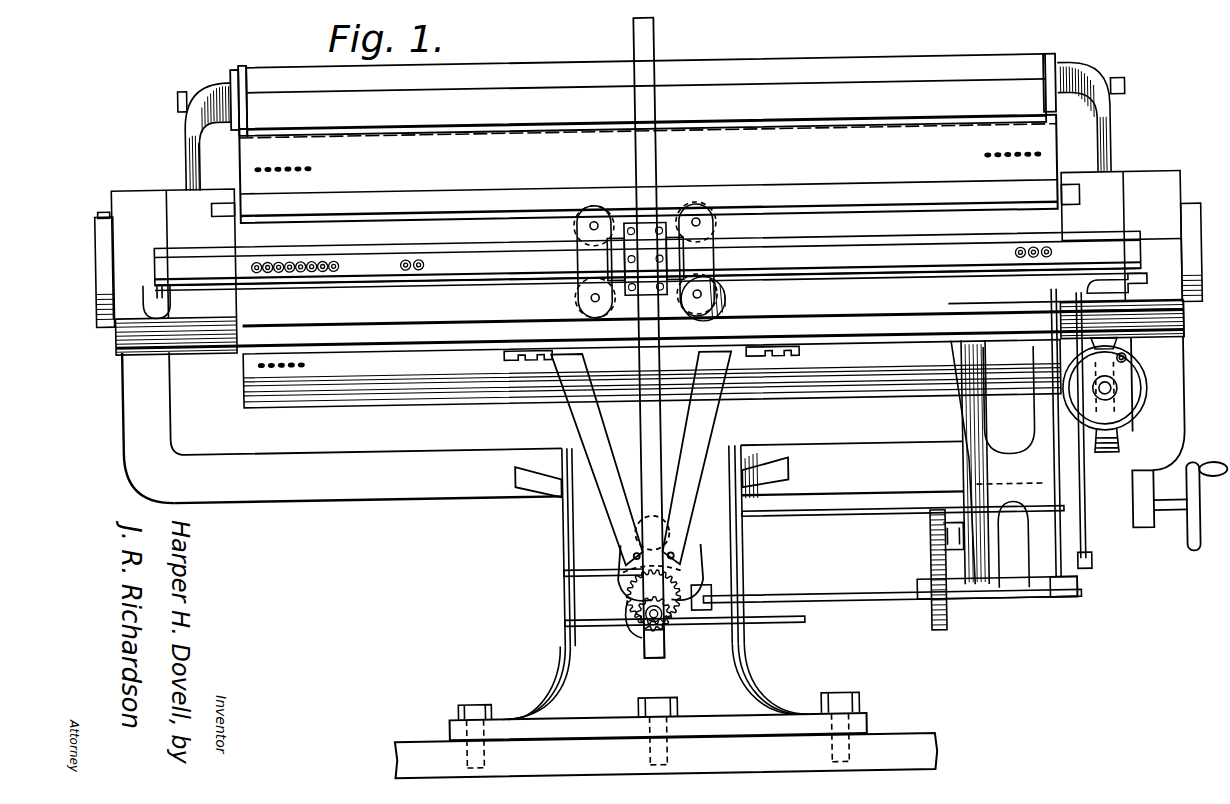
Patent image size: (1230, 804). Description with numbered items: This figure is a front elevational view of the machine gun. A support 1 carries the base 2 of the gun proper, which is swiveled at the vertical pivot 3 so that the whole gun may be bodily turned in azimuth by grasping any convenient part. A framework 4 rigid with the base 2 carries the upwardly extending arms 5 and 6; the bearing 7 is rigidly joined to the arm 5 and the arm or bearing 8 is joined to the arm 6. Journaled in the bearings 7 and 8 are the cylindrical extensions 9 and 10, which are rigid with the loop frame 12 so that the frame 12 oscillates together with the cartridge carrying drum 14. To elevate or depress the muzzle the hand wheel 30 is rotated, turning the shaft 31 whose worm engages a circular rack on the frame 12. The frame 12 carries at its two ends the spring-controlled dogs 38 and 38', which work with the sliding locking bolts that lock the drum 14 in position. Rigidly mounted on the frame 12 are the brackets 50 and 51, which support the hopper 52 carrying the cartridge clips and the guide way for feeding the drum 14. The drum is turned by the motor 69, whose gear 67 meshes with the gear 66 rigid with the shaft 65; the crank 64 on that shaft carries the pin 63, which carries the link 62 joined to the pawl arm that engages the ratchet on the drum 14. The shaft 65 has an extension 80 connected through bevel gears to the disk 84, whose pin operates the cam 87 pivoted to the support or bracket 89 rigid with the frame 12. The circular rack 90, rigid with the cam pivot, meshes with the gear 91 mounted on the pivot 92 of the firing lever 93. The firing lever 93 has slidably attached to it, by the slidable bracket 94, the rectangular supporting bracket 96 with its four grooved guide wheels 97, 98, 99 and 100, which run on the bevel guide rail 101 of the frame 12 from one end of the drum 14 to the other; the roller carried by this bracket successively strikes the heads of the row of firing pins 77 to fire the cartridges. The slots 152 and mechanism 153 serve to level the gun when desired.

The support 1 is at (560, 668).
The base 2 is at (575, 548).
The swivel pivot 3 is at (598, 575).
The framework 4 is at (440, 498).
The arm 5 is at (158, 411).
The arm 6 is at (1170, 378).
The bearing 7 is at (140, 195).
The arm or bearing 8 is at (1138, 186).
The cylindrical extension 9 is at (97, 303).
The cylindrical extension 10 is at (1178, 219).
The frame 12 is at (893, 328).
The cartridge carrying drum 14 is at (790, 130).
The hand wheel 30 is at (1134, 403).
The shaft 31 is at (1100, 393).
The dog 38 is at (176, 301).
The dog 38' is at (1117, 268).
The bracket 50 is at (1108, 124).
The bracket 51 is at (200, 136).
The hopper 52 is at (915, 64).
The link 62 is at (1085, 482).
The pin 63 is at (1090, 566).
The crank 64 is at (1080, 589).
The shaft 65 is at (1021, 598).
The gear 66 is at (940, 632).
The gear 67 is at (932, 538).
The motor 69 is at (962, 493).
The firing pins 77 is at (652, 263).
The shaft extension 80 is at (848, 605).
The disk 84 is at (622, 600).
The cam 87 is at (632, 630).
The support or bracket 89 is at (712, 420).
The circular rack 90 is at (683, 561).
The gear 91 is at (673, 633).
The pivot 92 is at (650, 656).
The firing lever 93 is at (646, 420).
The slidable bracket 94 is at (655, 240).
The rectangular supporting bracket 96 is at (704, 266).
The guide wheel 97 is at (715, 302).
The guide wheel 98 is at (578, 300).
The guide wheel 99 is at (596, 206).
The guide wheel 100 is at (717, 228).
The bevel guide rail 101 is at (208, 262).
The slots 152 is at (524, 466).
The leveling mechanism 153 is at (840, 519).